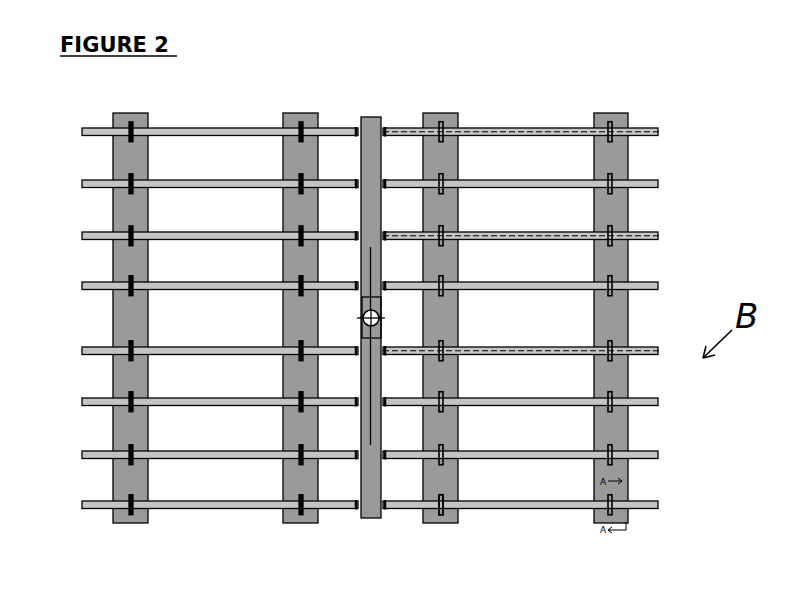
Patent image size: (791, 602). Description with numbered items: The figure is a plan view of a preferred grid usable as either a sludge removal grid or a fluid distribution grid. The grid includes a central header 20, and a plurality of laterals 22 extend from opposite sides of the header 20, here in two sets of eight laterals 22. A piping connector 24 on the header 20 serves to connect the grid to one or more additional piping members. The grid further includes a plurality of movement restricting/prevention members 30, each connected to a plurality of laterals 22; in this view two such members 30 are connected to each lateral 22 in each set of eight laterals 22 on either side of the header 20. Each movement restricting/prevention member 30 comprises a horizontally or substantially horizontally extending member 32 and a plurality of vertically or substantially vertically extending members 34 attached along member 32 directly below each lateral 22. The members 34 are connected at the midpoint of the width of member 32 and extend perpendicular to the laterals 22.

The header 20 is at (372, 518).
The laterals 22 is at (220, 125).
The piping connector 24 is at (362, 318).
The movement restricting/prevention members 30 is at (97, 492).
The horizontally extending member 32 is at (112, 157).
The vertically extending members 34 is at (438, 512).